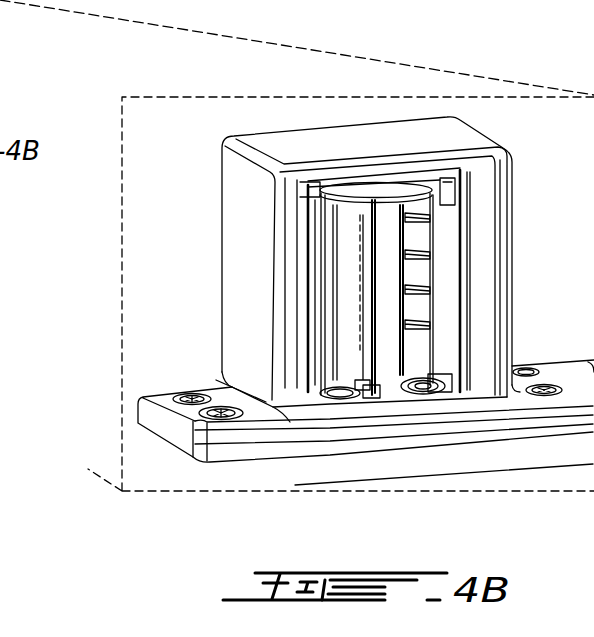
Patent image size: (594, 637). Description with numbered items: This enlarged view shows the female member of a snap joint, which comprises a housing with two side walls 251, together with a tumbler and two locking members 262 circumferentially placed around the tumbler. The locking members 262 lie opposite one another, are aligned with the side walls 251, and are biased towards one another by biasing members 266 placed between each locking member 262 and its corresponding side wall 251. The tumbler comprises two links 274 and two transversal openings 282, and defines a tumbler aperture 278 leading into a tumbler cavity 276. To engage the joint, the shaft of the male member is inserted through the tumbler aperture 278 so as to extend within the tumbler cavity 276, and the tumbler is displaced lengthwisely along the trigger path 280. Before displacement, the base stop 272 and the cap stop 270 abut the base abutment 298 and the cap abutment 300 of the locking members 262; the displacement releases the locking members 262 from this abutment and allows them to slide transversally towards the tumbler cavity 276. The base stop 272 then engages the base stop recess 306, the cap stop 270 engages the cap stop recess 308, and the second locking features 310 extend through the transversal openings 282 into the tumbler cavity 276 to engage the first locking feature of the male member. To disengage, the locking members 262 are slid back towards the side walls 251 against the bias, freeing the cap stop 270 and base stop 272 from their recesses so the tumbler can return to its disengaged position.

The side wall 251 is at (247, 200).
The locking member 262 is at (325, 262).
The biasing member 266 is at (470, 257).
The cap stop 270 is at (350, 267).
The base stop 272 is at (345, 396).
The link 274 is at (388, 253).
The tumbler cavity 276 is at (353, 314).
The tumbler aperture 278 is at (372, 398).
The trigger path 280 is at (357, 297).
The transversal opening 282 is at (355, 325).
The base abutment 298 is at (443, 387).
The cap abutment 300 is at (437, 200).
The base stop recess 306 is at (430, 387).
The cap stop recess 308 is at (450, 205).
The second locking feature 310 is at (427, 337).